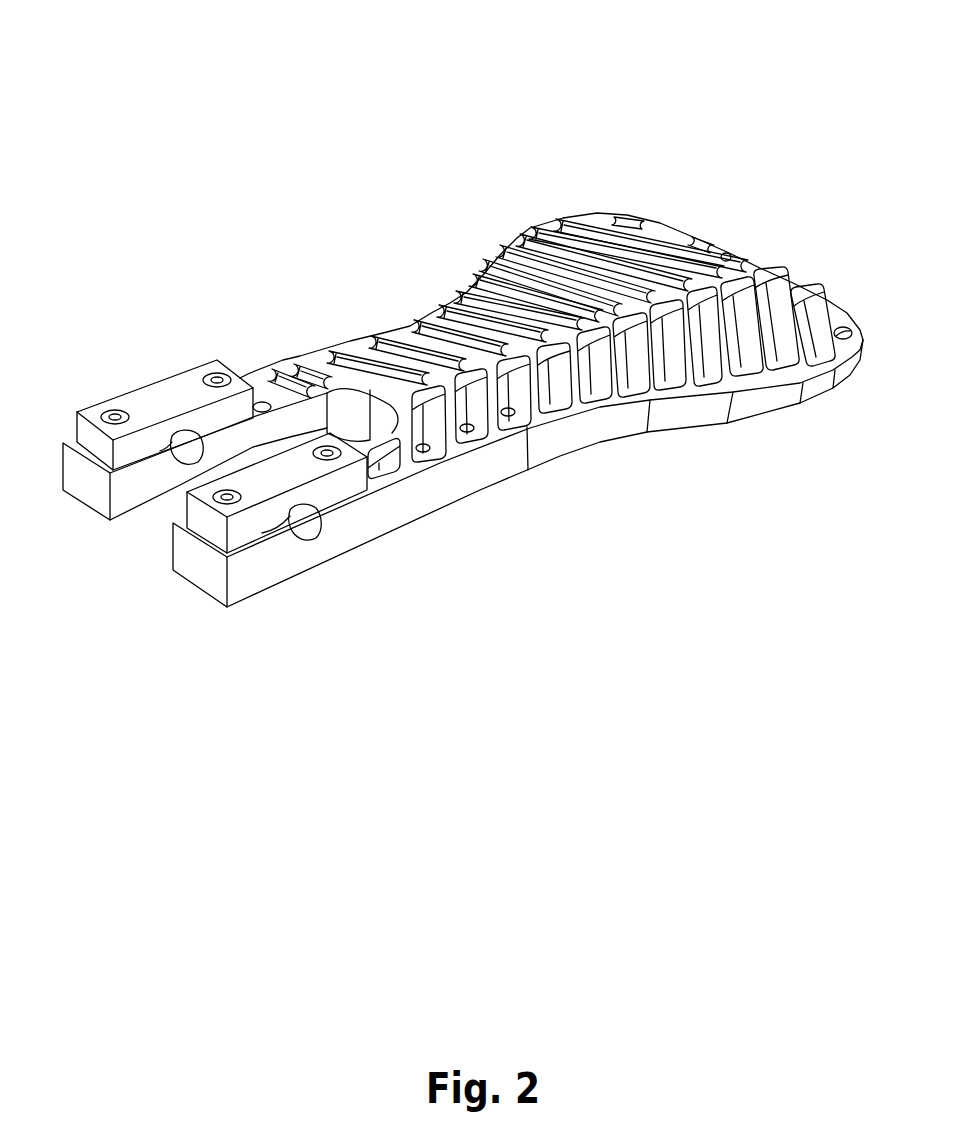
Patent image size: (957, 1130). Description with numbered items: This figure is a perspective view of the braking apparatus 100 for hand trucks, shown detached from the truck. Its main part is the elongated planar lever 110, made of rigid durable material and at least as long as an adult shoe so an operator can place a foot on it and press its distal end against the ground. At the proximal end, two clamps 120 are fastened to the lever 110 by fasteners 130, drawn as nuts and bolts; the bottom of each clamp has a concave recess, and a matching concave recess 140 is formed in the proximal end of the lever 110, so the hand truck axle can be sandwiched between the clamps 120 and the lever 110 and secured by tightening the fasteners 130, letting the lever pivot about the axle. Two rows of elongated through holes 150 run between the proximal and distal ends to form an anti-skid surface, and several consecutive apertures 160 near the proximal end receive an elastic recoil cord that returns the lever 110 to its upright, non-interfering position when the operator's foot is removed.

The braking apparatus 100 is at (328, 106).
The lever 110 is at (596, 445).
The clamps 120 is at (242, 514).
The fasteners 130 is at (114, 411).
The concave recess 140 is at (310, 522).
The elongated through holes 150 is at (427, 360).
The apertures 160 is at (428, 456).